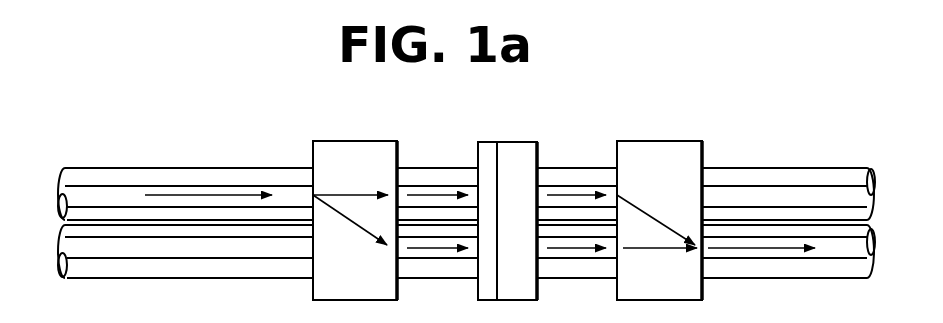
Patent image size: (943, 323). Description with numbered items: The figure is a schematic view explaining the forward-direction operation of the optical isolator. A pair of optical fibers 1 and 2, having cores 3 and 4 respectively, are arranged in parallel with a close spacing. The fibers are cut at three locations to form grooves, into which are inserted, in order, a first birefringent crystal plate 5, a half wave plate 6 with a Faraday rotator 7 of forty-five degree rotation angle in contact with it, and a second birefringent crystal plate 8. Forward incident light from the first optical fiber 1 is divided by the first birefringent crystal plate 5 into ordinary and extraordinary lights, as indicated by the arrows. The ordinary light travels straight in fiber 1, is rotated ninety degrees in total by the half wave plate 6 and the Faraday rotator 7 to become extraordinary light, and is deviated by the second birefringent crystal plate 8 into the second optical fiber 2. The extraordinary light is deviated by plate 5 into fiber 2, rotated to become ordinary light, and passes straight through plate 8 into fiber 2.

The first optical fiber 1 is at (57, 168).
The second optical fiber 2 is at (57, 225).
The core of first optical fiber 3 is at (104, 201).
The core of second optical fiber 4 is at (102, 252).
The first birefringent crystal plate 5 is at (321, 136).
The half wave plate 6 is at (472, 147).
The Faraday rotator 7 is at (508, 139).
The second birefringent crystal plate 8 is at (665, 137).